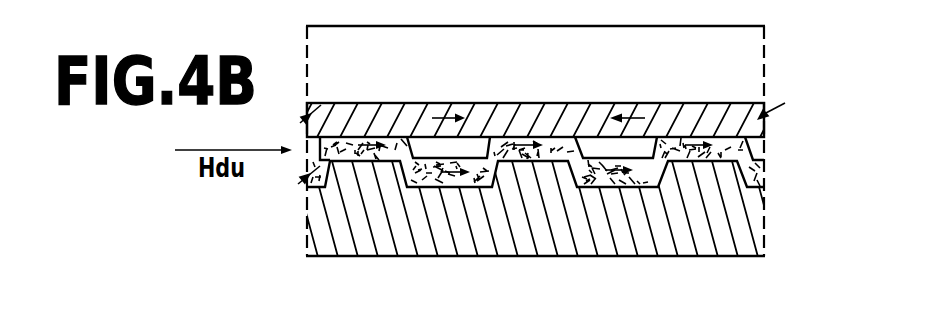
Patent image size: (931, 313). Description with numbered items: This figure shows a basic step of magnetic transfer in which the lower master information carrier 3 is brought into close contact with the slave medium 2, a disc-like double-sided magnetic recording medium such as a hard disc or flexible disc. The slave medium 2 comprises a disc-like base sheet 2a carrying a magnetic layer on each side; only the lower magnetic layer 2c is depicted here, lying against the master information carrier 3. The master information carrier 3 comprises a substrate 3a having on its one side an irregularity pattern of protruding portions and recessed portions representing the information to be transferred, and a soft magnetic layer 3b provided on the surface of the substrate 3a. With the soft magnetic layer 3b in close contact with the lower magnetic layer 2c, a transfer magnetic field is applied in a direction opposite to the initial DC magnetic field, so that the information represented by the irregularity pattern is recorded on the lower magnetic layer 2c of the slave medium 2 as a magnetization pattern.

The slave medium 2 is at (577, 82).
The base plate 2a is at (757, 62).
The lower magnetic layer 2c is at (559, 107).
The master information carrier 3 is at (576, 197).
The substrate 3a is at (747, 223).
The soft magnetic layer 3b is at (778, 172).